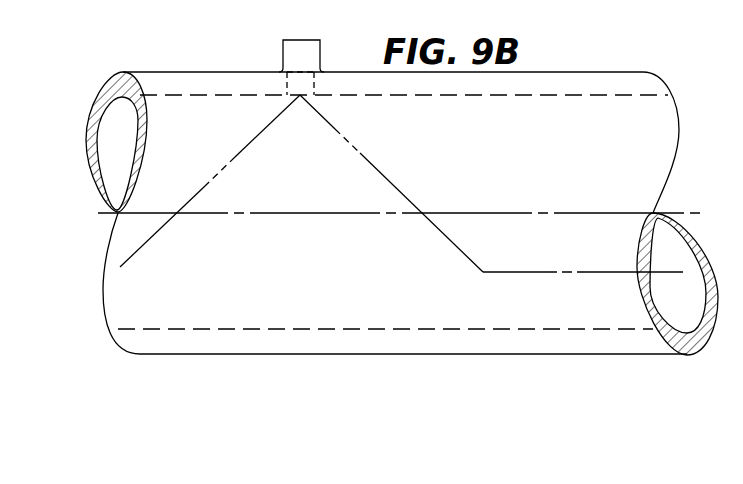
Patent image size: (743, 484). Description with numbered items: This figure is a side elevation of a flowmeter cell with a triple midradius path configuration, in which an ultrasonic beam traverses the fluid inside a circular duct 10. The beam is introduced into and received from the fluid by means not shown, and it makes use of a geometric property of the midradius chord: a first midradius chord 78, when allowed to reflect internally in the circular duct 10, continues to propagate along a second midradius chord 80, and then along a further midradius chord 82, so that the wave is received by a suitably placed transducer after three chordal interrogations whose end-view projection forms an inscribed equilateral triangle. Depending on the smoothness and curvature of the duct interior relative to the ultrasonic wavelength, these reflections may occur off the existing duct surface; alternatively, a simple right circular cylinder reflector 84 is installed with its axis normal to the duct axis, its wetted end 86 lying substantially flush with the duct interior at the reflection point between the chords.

The duct 10 is at (107, 322).
The midradius chord 78 is at (209, 180).
The second midradius chord 80 is at (392, 183).
The midradius chord 82 is at (527, 272).
The right circular cylinder reflector 84 is at (316, 55).
The wetted end 86 is at (308, 97).